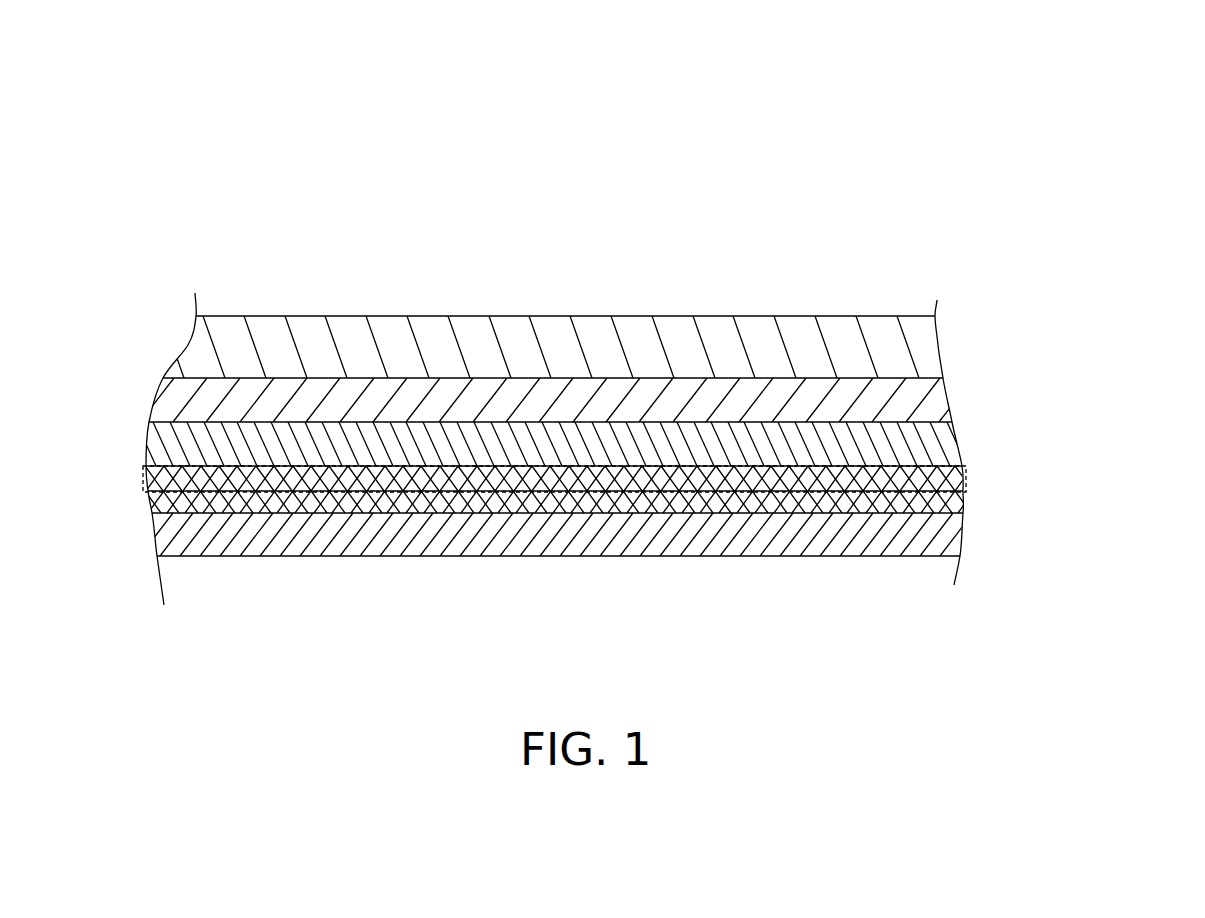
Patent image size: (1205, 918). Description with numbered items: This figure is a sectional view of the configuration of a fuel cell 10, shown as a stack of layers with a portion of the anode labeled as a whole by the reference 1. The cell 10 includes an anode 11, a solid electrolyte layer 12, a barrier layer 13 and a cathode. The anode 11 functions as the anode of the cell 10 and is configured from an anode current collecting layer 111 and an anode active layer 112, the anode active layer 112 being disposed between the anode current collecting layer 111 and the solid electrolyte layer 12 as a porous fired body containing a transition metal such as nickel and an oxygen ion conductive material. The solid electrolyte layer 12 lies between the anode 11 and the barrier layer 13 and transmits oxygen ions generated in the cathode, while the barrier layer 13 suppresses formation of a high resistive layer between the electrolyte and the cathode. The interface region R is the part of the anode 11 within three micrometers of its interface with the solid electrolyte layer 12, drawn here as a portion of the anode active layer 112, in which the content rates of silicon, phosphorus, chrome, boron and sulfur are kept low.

The display device 1 is at (152, 140).
The fuel cell 10 is at (1105, 313).
The anode 11 is at (1047, 487).
The anode current collecting layer 111 is at (947, 538).
The anode active layer 112 is at (942, 500).
The solid electrolyte layer 12 is at (925, 447).
The barrier layer 13 is at (925, 379).
The interface region R is at (143, 482).